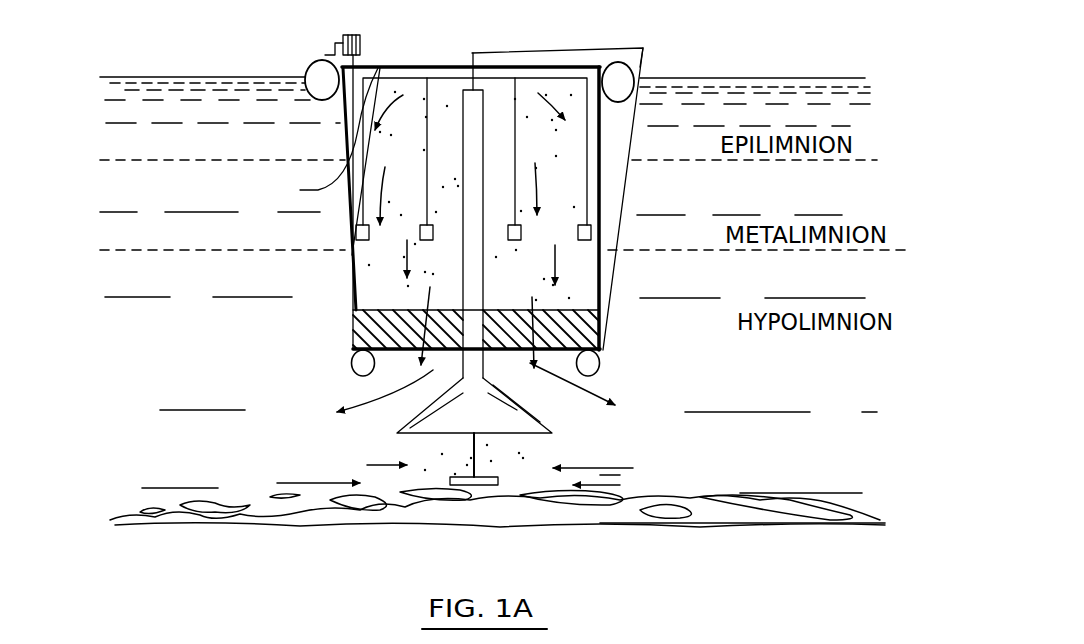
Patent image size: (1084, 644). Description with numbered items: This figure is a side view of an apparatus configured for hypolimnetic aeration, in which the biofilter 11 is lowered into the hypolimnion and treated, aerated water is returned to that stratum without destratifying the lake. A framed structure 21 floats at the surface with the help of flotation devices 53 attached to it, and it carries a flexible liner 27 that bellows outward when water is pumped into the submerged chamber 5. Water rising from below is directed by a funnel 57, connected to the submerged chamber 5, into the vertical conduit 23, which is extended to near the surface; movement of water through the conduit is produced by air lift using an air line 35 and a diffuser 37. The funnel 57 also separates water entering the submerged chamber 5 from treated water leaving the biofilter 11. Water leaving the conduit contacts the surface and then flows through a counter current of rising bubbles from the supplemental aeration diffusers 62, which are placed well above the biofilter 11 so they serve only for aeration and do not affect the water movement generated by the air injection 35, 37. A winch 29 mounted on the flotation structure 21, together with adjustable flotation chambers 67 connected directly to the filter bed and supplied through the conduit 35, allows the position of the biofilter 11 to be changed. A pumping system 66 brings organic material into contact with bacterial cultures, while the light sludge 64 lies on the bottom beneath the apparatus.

The submerged chamber 5 is at (558, 195).
The biofilter 11 is at (553, 337).
The framed structure 21 is at (603, 105).
The vertical conduit 23 is at (486, 373).
The flexible liner 27 is at (600, 170).
The winch 29 is at (343, 38).
The air line 35 is at (470, 53).
The diffuser 37 is at (457, 477).
The flotation devices 53 is at (305, 78).
The funnel 57 is at (500, 400).
The supplemental aeration diffusers 62 is at (592, 233).
The sludge 64 is at (655, 510).
The pumping system 66 is at (325, 135).
The adjustable flotation chambers 67 is at (600, 365).